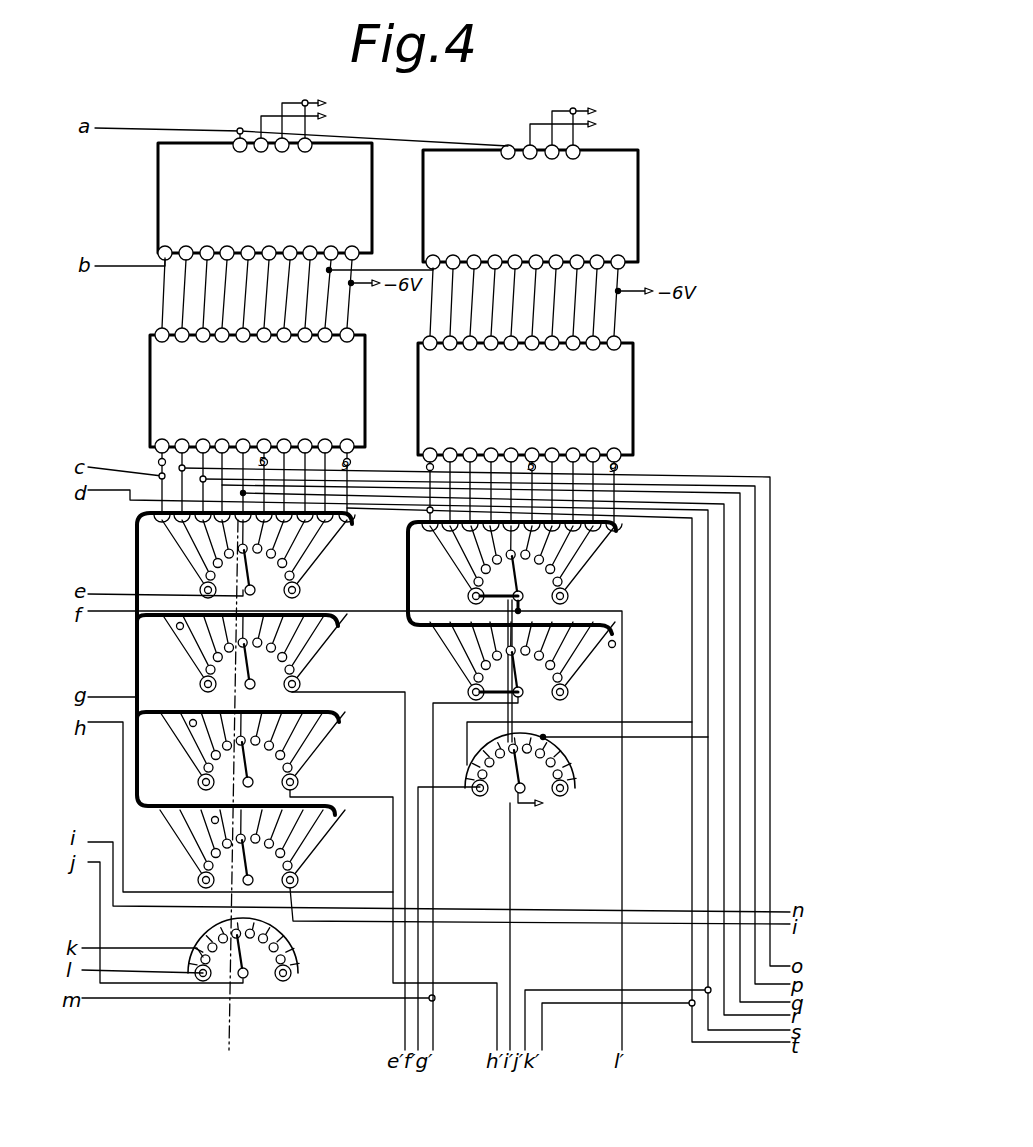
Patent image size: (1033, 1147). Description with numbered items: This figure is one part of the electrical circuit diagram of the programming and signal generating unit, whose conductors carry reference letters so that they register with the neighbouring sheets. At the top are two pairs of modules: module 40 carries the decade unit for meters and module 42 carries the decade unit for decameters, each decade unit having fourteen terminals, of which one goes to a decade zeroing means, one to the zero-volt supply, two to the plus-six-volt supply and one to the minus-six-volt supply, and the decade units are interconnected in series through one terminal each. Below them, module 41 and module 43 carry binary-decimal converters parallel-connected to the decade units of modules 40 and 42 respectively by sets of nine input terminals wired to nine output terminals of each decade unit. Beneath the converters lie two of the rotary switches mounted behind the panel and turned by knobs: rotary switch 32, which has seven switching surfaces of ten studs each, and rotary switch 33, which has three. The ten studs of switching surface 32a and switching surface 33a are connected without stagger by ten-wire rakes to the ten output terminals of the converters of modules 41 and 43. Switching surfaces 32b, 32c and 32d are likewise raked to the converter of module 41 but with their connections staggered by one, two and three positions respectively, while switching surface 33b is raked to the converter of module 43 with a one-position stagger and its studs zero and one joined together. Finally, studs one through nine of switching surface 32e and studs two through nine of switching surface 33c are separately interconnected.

The module 40 is at (286, 222).
The module 41 is at (284, 415).
The module 42 is at (557, 225).
The module 43 is at (555, 419).
The rotary switch 32 is at (262, 747).
The switching surface 32a is at (254, 559).
The switching surface 32b is at (242, 653).
The switching surface 32c is at (241, 751).
The switching surface 32d is at (246, 849).
The switching surface 32e is at (243, 949).
The rotary switch 33 is at (515, 664).
The switching surface 33a is at (522, 568).
The switching surface 33b is at (523, 661).
The switching surface 33c is at (520, 769).